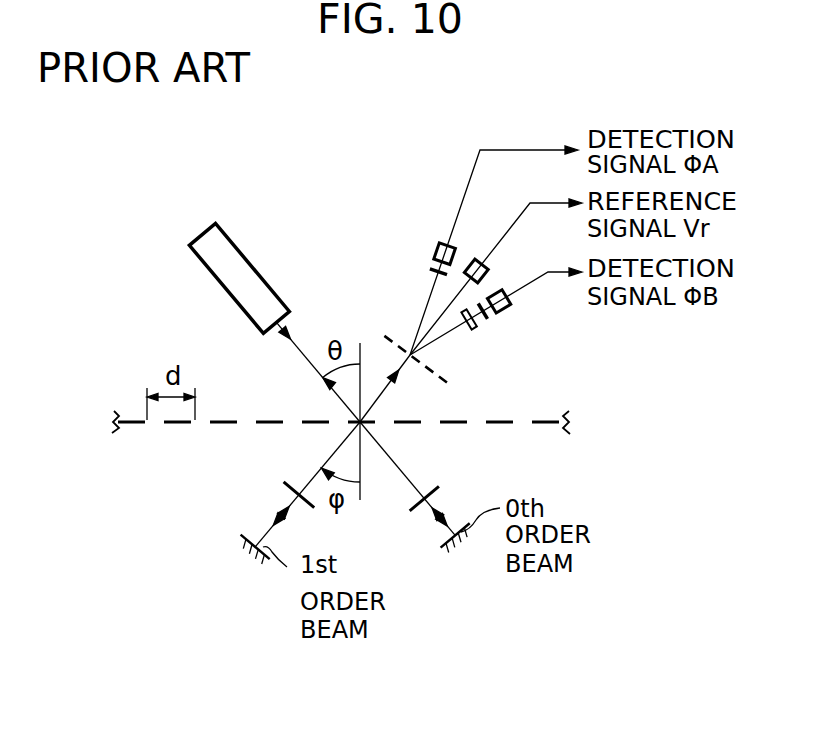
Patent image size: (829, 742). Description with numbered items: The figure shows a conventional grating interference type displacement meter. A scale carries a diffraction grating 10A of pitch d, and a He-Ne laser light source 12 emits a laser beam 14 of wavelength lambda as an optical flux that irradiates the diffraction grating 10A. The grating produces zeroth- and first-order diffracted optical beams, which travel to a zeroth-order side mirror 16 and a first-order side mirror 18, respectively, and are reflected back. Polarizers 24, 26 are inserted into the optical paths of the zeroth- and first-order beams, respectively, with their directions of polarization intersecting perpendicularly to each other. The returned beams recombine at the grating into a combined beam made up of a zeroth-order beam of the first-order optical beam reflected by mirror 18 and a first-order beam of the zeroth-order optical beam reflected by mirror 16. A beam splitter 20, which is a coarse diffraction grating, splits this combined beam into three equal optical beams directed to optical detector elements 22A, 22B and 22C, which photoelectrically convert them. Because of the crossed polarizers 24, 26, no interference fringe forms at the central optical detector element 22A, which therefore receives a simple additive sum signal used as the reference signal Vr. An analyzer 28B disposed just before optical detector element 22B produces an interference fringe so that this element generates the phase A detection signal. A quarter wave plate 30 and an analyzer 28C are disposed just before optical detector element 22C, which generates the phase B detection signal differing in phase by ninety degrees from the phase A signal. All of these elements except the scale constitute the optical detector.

The diffraction grating 10A is at (565, 424).
The He-Ne laser light source 12 is at (248, 268).
The laser beam 14 is at (304, 354).
The zeroth-order side mirror 16 is at (451, 555).
The first-order side mirror 18 is at (240, 541).
The beam splitter (coarse diffraction grating) 20 is at (437, 375).
The optical detector element 22A is at (480, 262).
The optical detector element 22B is at (437, 246).
The optical detector element 22C is at (498, 293).
The polarizer 24 is at (436, 488).
The polarizer 26 is at (287, 482).
The analyzer 28B is at (432, 271).
The analyzer 28C is at (485, 318).
The quarter wave plate 30 is at (472, 327).